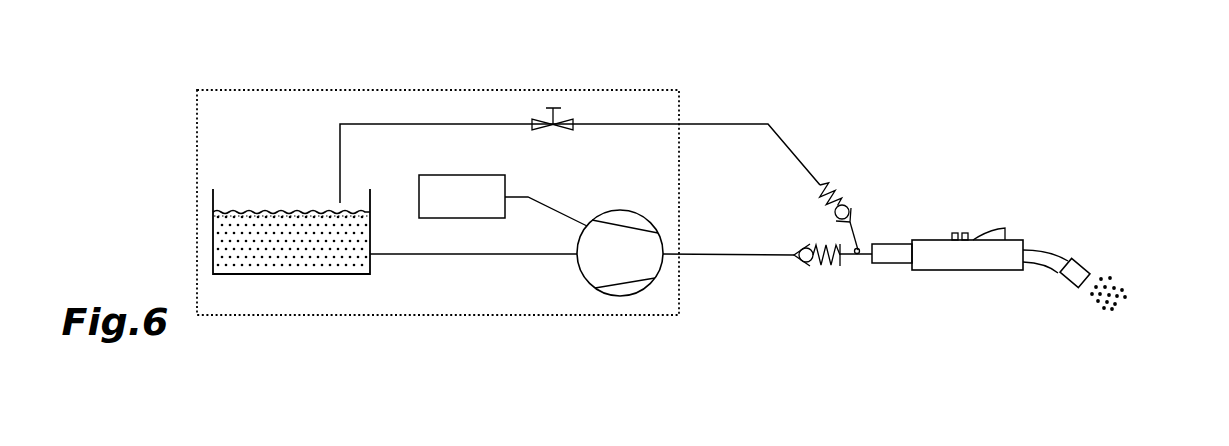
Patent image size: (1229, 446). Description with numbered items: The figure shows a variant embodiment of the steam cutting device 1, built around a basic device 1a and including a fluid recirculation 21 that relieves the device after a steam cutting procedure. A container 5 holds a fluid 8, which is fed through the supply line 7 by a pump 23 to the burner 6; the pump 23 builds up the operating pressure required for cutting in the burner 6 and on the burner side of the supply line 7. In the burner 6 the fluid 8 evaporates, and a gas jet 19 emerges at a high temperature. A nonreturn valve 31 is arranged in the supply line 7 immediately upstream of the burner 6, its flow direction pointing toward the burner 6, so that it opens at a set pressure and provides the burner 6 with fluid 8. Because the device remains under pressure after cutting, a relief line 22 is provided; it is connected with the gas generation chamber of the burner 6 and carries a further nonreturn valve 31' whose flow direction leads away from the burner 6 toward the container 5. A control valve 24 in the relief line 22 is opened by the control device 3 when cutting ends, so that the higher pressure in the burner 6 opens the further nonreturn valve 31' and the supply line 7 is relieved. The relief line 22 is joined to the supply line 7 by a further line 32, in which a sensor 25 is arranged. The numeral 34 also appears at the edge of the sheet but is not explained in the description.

The steam cutting device 1 is at (168, 128).
The basic device 1a is at (695, 102).
The fluid recirculation 21 is at (285, 108).
The container 5 is at (238, 295).
The fluid 8 is at (288, 235).
The relief line 22 is at (740, 125).
The control valve 24 is at (532, 108).
The control device 3 is at (453, 202).
The pump 23 is at (617, 255).
The supply line 7 is at (483, 255).
The nonreturn valve 31 is at (807, 340).
The further nonreturn valve 31' is at (874, 145).
The sensor 25 is at (862, 237).
The further line 32 is at (860, 240).
The burner 6 is at (951, 297).
The gas jet 19 is at (1127, 272).
The element 34 is at (311, 439).